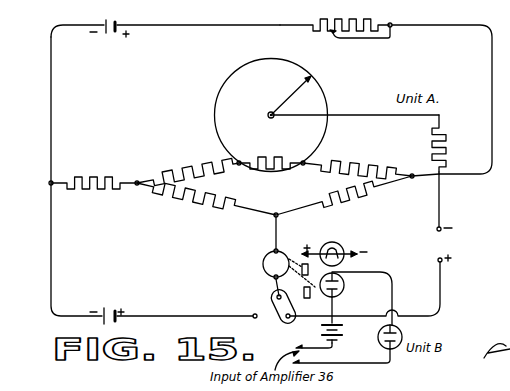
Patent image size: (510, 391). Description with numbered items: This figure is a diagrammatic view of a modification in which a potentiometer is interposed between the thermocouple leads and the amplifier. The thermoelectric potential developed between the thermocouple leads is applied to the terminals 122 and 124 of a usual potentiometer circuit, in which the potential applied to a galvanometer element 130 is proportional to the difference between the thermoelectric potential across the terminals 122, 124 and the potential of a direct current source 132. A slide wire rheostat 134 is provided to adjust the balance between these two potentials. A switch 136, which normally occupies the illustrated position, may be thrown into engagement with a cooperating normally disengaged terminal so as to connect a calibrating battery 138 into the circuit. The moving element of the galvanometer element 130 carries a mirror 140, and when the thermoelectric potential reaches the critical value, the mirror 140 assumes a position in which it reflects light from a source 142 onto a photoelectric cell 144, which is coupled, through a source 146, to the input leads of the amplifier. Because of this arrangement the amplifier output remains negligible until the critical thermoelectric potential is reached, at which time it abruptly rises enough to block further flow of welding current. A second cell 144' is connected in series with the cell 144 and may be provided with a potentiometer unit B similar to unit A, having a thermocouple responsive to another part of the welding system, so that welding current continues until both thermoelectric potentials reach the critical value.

The terminal 122 is at (443, 226).
The terminal 124 is at (443, 263).
The galvanometer element 130 is at (270, 255).
The direct current source 132 is at (115, 20).
The slide wire rheostat 134 is at (317, 97).
The switch 136 is at (272, 320).
The calibrating battery 138 is at (108, 306).
The mirror 140 is at (291, 257).
The light source 142 is at (333, 242).
The photoelectric cell 144 is at (349, 286).
The second cell 144' is at (412, 337).
The source 146 is at (340, 333).